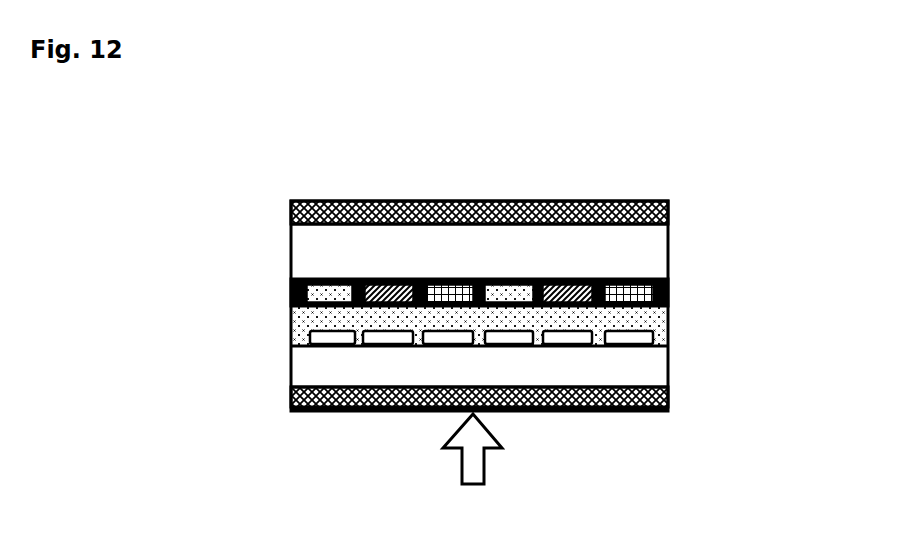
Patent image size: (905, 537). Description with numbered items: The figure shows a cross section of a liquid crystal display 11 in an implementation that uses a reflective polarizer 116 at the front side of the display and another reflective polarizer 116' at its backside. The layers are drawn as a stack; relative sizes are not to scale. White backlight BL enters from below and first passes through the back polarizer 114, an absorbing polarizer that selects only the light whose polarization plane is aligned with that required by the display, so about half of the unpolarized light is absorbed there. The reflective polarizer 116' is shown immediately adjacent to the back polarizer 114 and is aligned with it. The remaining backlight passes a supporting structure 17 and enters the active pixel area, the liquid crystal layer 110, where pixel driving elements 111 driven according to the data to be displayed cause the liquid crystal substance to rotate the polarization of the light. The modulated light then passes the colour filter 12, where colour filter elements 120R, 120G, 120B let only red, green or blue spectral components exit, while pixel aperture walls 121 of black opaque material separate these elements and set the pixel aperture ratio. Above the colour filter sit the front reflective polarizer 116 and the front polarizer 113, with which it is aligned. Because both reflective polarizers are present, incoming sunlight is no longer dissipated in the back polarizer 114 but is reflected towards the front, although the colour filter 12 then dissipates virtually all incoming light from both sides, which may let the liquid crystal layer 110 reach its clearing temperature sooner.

The liquid crystal display 11 is at (762, 185).
The colour filter 12 is at (672, 289).
The supporting structure 17 is at (493, 248).
The liquid crystal layer 110 is at (615, 318).
The pixel driving elements 111 is at (320, 332).
The front polarizer 113 is at (672, 207).
The back polarizer 114 is at (572, 412).
The reflective polarizer 116 is at (443, 196).
The reflective polarizer 116' is at (512, 419).
The colour filter element 120R is at (327, 268).
The colour filter element 120G is at (377, 268).
The colour filter element 120B is at (447, 268).
The pixel aperture walls 121 is at (543, 270).
The backlight BL is at (472, 463).